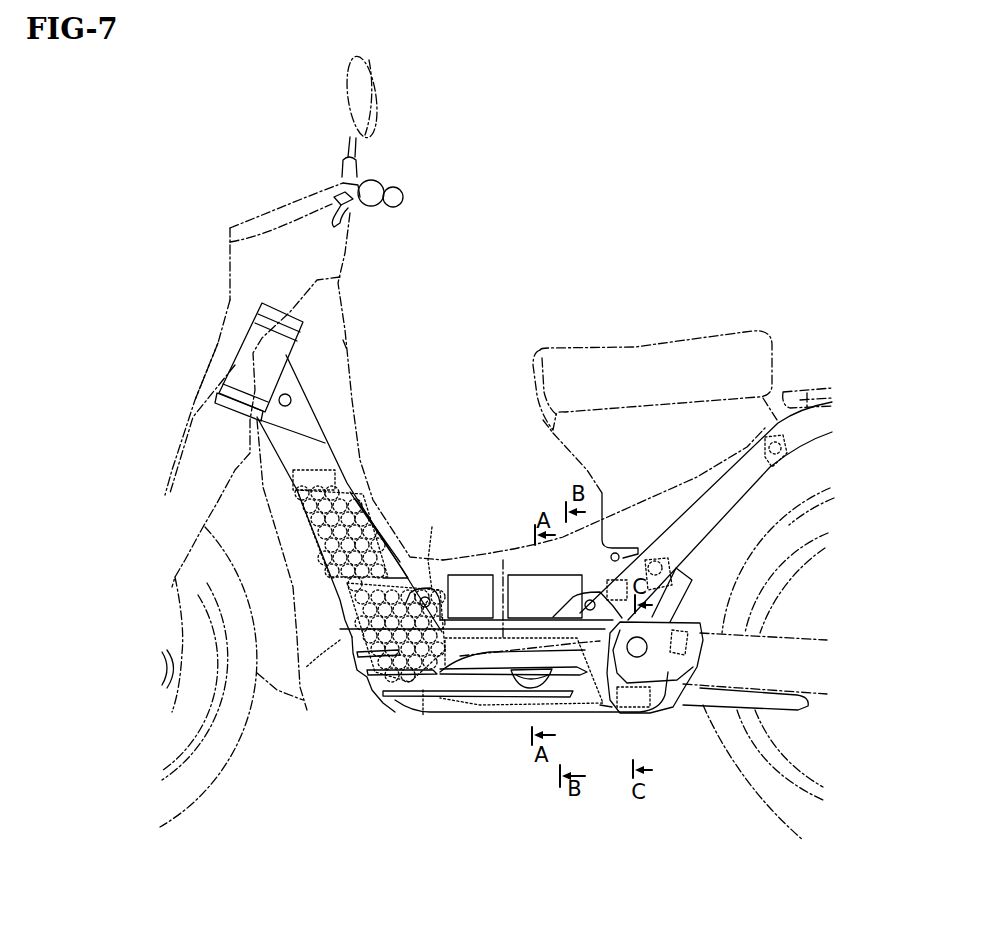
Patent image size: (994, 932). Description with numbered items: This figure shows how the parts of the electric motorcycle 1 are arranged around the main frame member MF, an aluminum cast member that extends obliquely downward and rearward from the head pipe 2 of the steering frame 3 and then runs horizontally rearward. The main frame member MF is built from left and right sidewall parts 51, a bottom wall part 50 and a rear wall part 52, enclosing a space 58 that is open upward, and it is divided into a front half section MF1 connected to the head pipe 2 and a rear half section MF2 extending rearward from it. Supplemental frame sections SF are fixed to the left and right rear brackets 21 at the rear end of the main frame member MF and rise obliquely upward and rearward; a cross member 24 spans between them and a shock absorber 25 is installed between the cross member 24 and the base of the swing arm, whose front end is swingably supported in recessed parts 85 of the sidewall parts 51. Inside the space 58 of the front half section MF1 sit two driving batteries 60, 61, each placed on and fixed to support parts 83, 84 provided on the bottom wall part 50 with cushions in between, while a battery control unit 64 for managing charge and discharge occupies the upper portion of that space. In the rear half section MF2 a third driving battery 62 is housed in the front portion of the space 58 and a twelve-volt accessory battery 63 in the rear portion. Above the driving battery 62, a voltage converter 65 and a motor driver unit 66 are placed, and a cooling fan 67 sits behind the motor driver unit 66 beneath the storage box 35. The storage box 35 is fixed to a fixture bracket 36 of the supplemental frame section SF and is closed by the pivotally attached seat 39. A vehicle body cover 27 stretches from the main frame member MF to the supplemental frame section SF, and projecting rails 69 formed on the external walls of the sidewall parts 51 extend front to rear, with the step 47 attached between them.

The motorcycle 1 is at (552, 212).
The head pipe 2 is at (240, 335).
The steering frame 3 is at (197, 400).
The main frame member MF is at (300, 388).
The vehicle body cover 27 is at (349, 420).
The space 58 is at (288, 463).
The battery control unit 64 is at (347, 483).
The front half section MF1 is at (352, 490).
The driving battery 60 is at (370, 513).
The driving battery 61 is at (428, 548).
The voltage converter 65 is at (468, 575).
The motor driver unit 66 is at (520, 575).
The storage box 35 is at (547, 450).
The fixture bracket 36 is at (604, 497).
The cooling fan 67 is at (627, 547).
The rear bracket 21 is at (575, 610).
The cross member 24 is at (667, 558).
The shock absorber 25 is at (667, 602).
The rear wall part 52 is at (700, 655).
The recessed part 85 is at (663, 663).
The bottom wall part 50 is at (343, 652).
The projecting rail 69 is at (345, 663).
The 12-volt battery 63 is at (633, 690).
The driving battery 62 is at (490, 688).
The rear half section MF2 is at (465, 717).
The step 47 is at (532, 682).
The sidewall part 51 is at (608, 707).
The support part 83 is at (340, 640).
The support part 84 is at (423, 715).
The seat 39 is at (640, 346).
The supplemental frame section SF is at (777, 417).